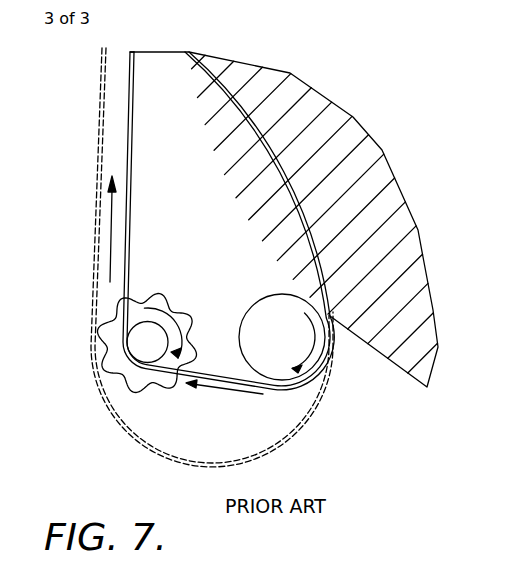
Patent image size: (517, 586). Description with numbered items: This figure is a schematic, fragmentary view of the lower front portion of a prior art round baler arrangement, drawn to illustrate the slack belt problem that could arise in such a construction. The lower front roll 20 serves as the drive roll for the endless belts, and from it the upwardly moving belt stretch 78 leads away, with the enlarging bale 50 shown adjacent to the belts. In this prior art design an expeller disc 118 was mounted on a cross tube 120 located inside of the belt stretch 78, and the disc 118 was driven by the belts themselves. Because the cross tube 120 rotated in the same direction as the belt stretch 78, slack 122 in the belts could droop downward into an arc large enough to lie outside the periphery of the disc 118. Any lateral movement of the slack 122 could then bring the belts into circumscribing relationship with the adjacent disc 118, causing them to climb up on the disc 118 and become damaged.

The lower front roll 20 is at (259, 319).
The bale 50 is at (335, 122).
The belt stretch 78 is at (127, 158).
The expeller disc 118 is at (148, 378).
The cross tube 120 is at (140, 330).
The slack 122 is at (153, 456).